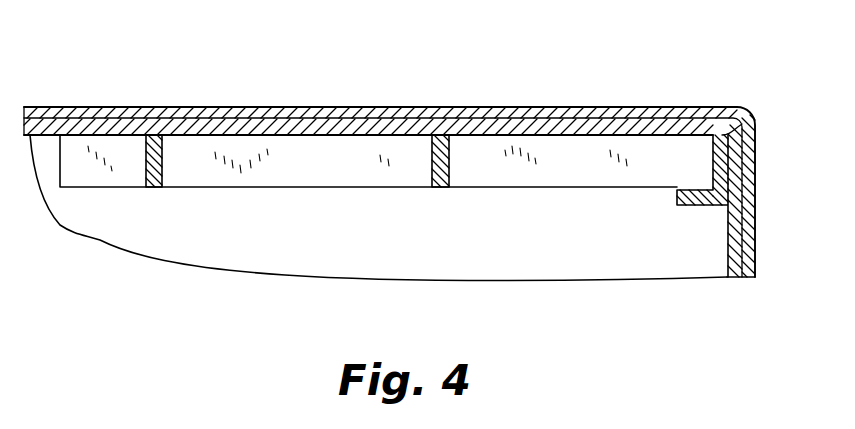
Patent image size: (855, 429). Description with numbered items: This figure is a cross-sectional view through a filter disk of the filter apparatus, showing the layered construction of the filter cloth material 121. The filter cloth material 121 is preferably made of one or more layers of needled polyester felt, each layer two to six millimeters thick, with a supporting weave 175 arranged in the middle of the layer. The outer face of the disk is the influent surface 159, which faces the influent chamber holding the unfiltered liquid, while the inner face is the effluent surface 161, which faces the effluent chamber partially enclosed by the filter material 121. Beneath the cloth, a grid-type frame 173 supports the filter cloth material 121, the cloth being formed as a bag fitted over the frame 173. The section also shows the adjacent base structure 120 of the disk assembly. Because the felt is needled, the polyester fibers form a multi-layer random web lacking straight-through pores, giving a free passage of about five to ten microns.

The base body 120 is at (408, 259).
The filter cloth material 121 is at (90, 103).
The influent surface 159 is at (339, 106).
The effluent surface 161 is at (337, 136).
The grid-type frame 173 is at (449, 171).
The supporting weave 175 is at (737, 107).